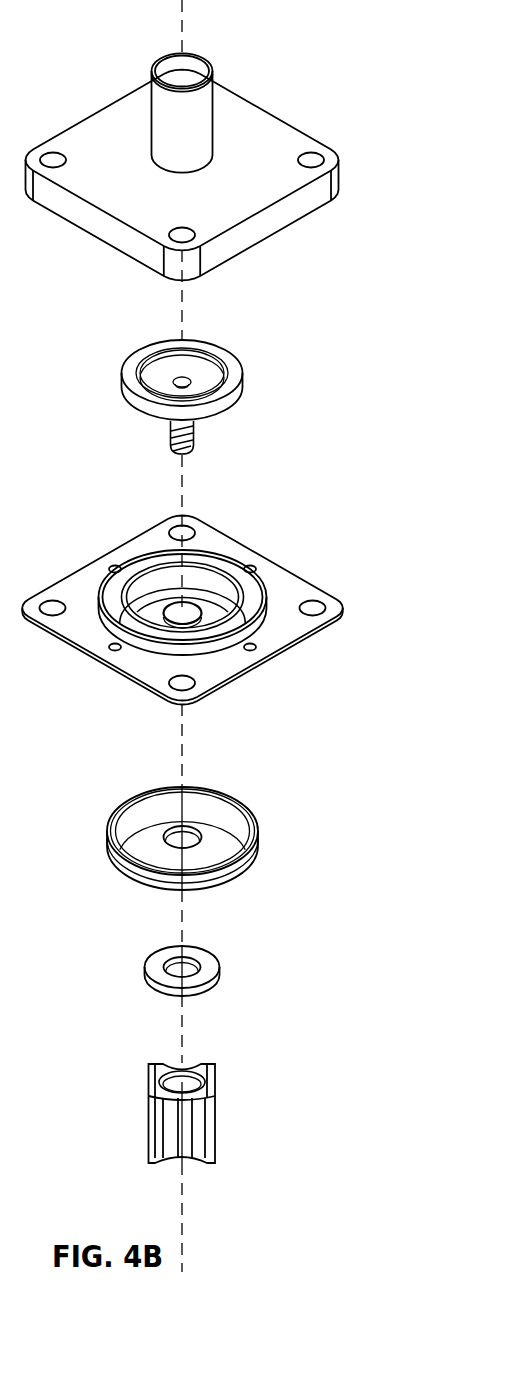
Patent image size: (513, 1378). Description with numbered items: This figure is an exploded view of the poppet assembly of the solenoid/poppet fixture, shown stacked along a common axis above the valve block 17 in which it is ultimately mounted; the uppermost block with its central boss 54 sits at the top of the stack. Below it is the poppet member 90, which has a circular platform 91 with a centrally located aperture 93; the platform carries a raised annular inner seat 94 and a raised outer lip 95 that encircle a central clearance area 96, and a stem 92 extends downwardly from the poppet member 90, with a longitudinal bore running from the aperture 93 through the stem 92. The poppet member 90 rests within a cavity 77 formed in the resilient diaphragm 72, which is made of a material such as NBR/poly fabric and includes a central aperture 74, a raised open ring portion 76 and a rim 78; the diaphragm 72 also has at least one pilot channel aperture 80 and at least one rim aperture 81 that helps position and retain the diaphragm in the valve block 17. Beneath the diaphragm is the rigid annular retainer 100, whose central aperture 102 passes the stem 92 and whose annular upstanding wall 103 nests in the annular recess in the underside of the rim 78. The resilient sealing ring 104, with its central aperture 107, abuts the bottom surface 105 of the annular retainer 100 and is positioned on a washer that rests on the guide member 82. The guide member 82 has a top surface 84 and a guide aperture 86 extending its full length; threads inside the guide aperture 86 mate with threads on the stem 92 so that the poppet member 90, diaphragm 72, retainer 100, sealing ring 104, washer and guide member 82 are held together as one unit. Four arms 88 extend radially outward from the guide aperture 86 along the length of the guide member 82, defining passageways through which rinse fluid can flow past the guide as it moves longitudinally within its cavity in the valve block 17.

The mounting boss 54 is at (152, 76).
The poppet member 90 is at (183, 369).
The circular platform 91 is at (241, 397).
The stem 92 is at (183, 437).
The centrally located aperture 93 is at (170, 347).
The raised annular inner seat 94 is at (171, 386).
The raised outer lip 95 is at (181, 376).
The central clearance area 96 is at (197, 365).
The resilient diaphragm 72 is at (177, 606).
The central aperture 74 is at (173, 617).
The raised open ring portion 76 is at (147, 562).
The cavity 77 is at (207, 600).
The rim 78 is at (278, 583).
The pilot channel aperture 80 is at (113, 650).
The rim aperture 81 is at (311, 606).
The valve block 17 is at (9, 679).
The annular retainer 100 is at (187, 824).
The central aperture 102 is at (188, 840).
The annular upstanding wall 103 is at (252, 857).
The bottom surface 105 is at (199, 890).
The sealing ring 104 is at (178, 948).
The central aperture 107 is at (190, 966).
The guide member 82 is at (182, 1080).
The top surface 84 is at (216, 1097).
The guide aperture 86 is at (187, 1077).
The arms 88 is at (216, 1142).